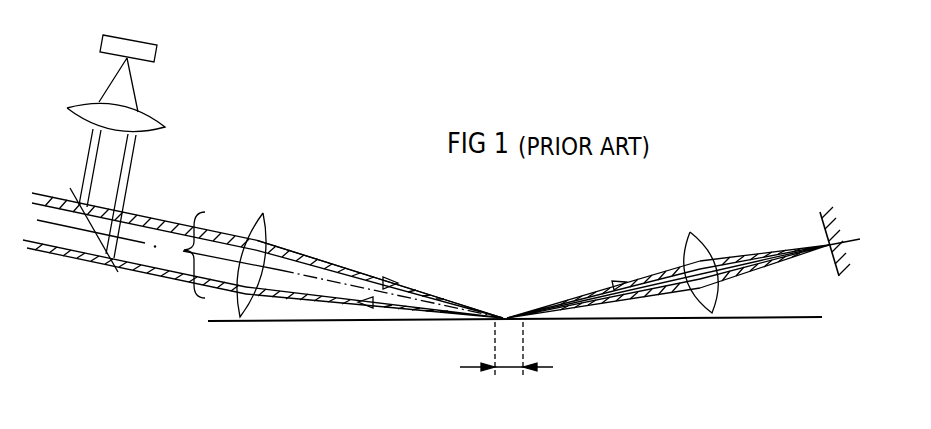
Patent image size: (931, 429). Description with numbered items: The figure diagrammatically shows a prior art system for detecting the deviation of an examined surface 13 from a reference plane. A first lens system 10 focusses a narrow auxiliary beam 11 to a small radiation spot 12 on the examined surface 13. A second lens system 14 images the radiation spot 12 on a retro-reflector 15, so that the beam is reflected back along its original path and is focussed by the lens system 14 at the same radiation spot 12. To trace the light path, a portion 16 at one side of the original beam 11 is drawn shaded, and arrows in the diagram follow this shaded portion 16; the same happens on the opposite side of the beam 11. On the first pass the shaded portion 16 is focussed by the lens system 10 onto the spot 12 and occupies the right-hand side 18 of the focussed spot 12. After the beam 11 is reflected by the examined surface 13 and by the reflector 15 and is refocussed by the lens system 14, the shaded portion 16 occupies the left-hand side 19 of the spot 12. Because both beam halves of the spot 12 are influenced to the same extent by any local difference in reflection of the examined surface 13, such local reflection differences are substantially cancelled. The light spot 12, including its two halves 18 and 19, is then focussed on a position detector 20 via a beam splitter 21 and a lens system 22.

The first lens system 10 is at (257, 235).
The auxiliary beam 11 is at (263, 255).
The radiation spot 12 is at (506, 383).
The examined surface 13 is at (707, 320).
The second lens system 14 is at (682, 254).
The retro-reflector 15 is at (827, 233).
The shaded portion of the beam 16 is at (281, 251).
The right-hand side of the focussed spot 18 is at (510, 322).
The left-hand side of the spot 19 is at (497, 322).
The position detector 20 is at (157, 51).
The beam splitter 21 is at (112, 268).
The lens system 22 is at (91, 110).